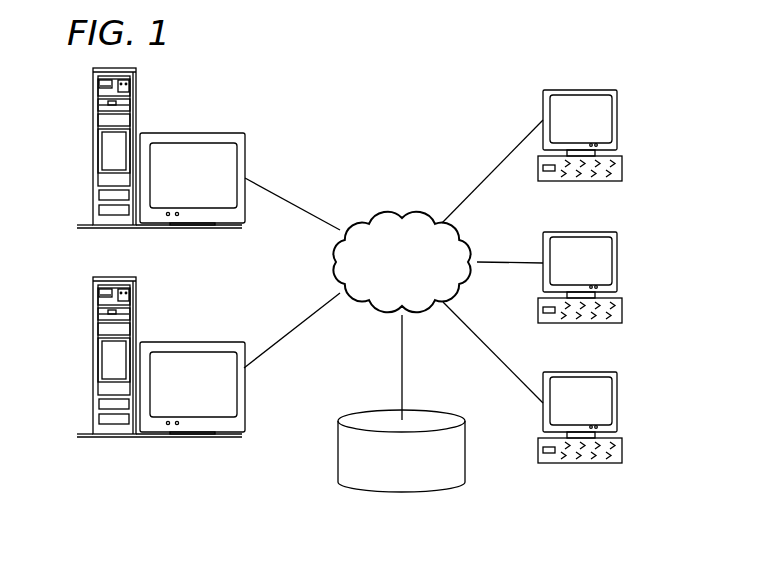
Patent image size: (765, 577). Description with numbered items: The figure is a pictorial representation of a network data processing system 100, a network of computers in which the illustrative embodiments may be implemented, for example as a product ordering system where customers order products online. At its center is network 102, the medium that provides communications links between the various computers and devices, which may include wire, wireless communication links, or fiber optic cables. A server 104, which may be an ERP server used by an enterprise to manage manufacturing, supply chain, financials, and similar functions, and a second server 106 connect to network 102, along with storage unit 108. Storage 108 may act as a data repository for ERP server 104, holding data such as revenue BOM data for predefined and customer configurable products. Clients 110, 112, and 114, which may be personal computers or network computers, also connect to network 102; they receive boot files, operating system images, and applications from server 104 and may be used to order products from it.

The network data processing system 100 is at (450, 102).
The network 102 is at (373, 213).
The server 104 is at (93, 152).
The server 106 is at (93, 362).
The storage unit 108 is at (385, 493).
The client 110 is at (617, 120).
The client 112 is at (617, 263).
The client 114 is at (617, 400).